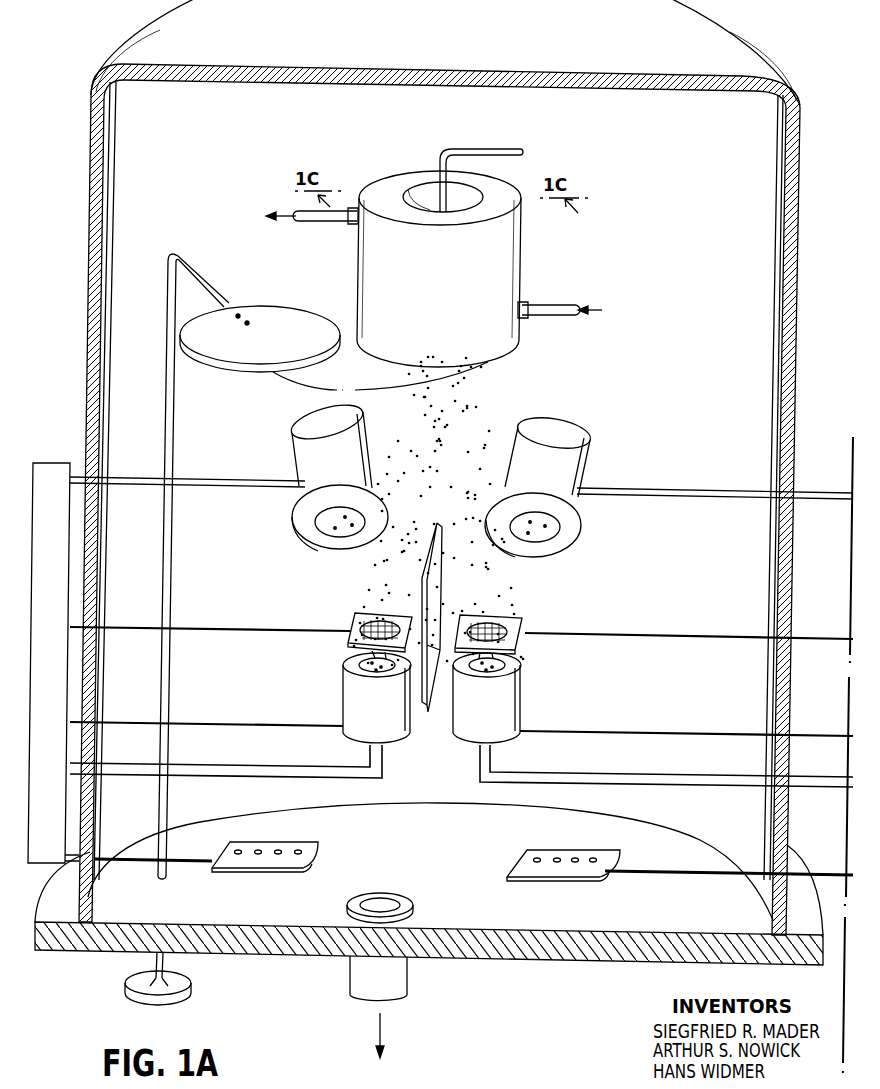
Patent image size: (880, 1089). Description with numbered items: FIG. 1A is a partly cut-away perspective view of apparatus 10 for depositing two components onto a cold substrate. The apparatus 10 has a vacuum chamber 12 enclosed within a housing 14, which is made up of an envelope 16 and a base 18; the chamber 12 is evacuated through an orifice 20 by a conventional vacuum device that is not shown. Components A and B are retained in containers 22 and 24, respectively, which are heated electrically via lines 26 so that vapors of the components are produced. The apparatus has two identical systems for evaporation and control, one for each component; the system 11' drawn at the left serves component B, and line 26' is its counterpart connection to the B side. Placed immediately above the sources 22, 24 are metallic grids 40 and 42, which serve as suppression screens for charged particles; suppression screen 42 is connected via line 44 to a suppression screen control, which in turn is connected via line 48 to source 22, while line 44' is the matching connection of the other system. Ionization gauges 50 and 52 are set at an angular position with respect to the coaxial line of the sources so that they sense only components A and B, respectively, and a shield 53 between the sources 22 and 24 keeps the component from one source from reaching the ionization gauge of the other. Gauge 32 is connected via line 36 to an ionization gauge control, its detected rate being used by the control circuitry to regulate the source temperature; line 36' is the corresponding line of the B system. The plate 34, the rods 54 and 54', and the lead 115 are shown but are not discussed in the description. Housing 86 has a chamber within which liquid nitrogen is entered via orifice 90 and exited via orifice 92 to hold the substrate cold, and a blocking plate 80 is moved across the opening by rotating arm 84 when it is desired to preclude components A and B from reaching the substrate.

The apparatus 10 is at (843, 31).
The evaporation and control system 11' is at (53, 644).
The vacuum chamber 12 is at (674, 272).
The housing 14 is at (800, 138).
The envelope 16 is at (789, 581).
The base 18 is at (628, 958).
The orifice 20 is at (382, 898).
The source container 22 is at (522, 695).
The source container 24 is at (345, 690).
The lines 26 is at (666, 767).
The electrical lead 26' is at (226, 760).
The ionization gauge 32 is at (522, 853).
The support plate 34 is at (320, 848).
The line 36 is at (729, 890).
The support rod 36' is at (153, 877).
The metallic grid 40 is at (348, 643).
The suppression screen 42 is at (520, 648).
The line 44 is at (689, 622).
The support rod 44' is at (210, 612).
The line 48 is at (825, 737).
The ionization gauge 50 is at (570, 541).
The ionization gauge 52 is at (298, 528).
The shield 53 is at (433, 630).
The support rod 54 is at (715, 478).
The support rod 54' is at (187, 466).
The blocking plate 80 is at (262, 355).
The rotating arm 84 is at (160, 963).
The housing 86 is at (386, 165).
The orifice 90 is at (554, 303).
The orifice 92 is at (330, 229).
The thermocouple lead 115 is at (507, 149).